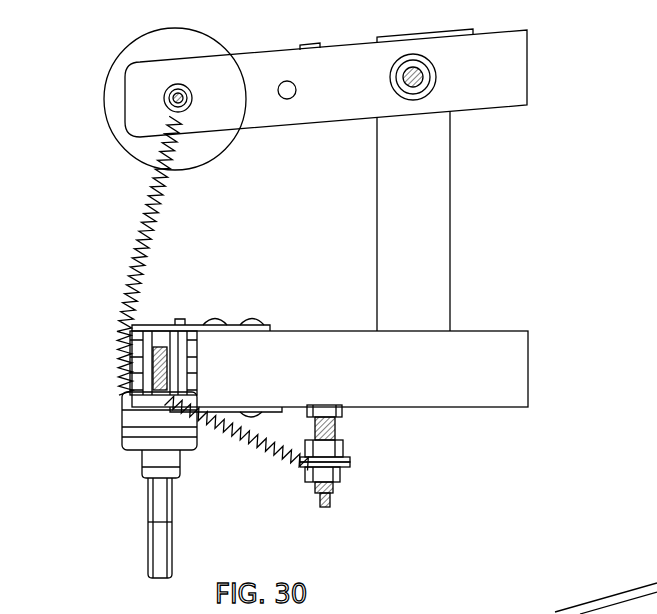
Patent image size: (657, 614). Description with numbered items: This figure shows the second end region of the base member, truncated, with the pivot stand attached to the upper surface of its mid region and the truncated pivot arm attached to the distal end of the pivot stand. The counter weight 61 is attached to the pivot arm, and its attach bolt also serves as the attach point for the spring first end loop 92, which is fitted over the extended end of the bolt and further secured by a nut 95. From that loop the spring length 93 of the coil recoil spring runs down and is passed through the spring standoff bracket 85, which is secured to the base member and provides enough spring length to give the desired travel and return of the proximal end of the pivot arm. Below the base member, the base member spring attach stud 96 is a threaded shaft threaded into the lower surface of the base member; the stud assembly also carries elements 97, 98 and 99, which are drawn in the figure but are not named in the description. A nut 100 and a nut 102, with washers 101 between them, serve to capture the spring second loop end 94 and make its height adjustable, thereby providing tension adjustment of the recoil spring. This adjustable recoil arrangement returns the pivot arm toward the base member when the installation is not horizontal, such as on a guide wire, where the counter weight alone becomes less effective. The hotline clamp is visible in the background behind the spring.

The counter weight 61 is at (228, 158).
The spring standoff bracket 85 is at (164, 326).
The spring first end loop 92 is at (162, 93).
The spring length 93 is at (112, 372).
The spring second loop end 94 is at (294, 469).
The nut 95 is at (189, 84).
The base member spring attach stud 96 is at (344, 412).
The threaded bolt 97 is at (338, 420).
The nut 98 is at (345, 438).
The bolt end 99 is at (324, 502).
The nut 100 is at (348, 448).
The washers 101 is at (349, 461).
The nut 102 is at (351, 473).